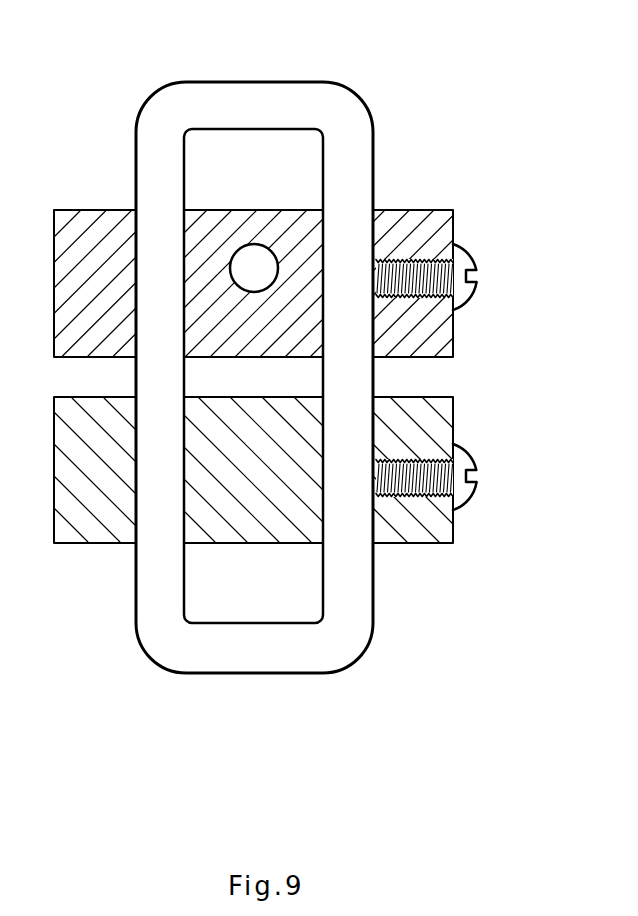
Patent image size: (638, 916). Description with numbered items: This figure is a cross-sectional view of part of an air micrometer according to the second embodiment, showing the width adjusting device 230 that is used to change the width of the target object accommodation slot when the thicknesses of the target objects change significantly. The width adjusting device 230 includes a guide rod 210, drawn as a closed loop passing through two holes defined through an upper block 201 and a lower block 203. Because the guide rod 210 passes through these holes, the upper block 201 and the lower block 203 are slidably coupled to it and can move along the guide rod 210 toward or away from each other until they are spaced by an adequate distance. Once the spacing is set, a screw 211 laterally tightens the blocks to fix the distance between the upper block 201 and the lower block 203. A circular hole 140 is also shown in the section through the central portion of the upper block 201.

The coupling hole 140 is at (253, 243).
The upper block 201 is at (79, 208).
The lower block 203 is at (80, 545).
The guide rod 210 is at (346, 98).
The screw 211 is at (465, 258).
The width adjusting device 230 is at (303, 398).